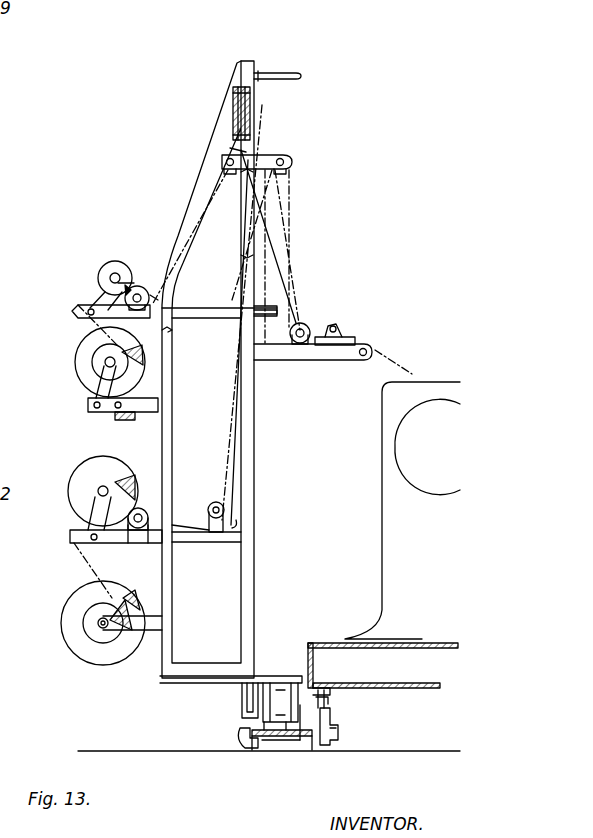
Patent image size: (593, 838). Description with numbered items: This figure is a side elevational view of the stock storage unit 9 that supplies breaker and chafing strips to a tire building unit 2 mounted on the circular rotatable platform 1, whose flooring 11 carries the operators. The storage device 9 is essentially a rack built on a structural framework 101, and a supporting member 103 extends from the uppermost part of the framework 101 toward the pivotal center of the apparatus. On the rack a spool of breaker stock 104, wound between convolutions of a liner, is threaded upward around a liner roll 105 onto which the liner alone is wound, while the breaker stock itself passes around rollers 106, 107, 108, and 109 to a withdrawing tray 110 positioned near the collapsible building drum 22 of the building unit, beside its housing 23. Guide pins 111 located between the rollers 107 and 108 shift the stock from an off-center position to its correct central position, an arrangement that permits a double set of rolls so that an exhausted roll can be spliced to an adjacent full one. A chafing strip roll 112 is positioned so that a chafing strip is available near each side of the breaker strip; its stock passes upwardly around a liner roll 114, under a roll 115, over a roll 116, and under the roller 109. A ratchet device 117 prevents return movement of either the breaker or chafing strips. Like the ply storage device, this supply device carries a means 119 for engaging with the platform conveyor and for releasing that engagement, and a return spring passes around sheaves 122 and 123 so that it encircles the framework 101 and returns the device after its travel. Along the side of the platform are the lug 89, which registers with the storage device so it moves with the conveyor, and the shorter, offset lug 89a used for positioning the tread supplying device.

The circular rotatable platform 1 is at (302, 628).
The tire building unit 2 is at (366, 440).
The stock storage unit for breaker and chafing strips 9 is at (162, 193).
The flooring 11 is at (323, 645).
The collapsible building drum 22 is at (433, 406).
The housing 23 is at (387, 528).
The lug 89 is at (327, 690).
The lug for positioning the tread supplying device 89a is at (330, 704).
The structural framework 101 is at (254, 486).
The supporting member 103 is at (283, 74).
The spool of fabric or breaker stock 104 is at (63, 623).
The liner roll 105 is at (71, 491).
The roller 106 is at (137, 530).
The roller 107 is at (215, 503).
The roller 108 is at (280, 155).
The roller 109 is at (304, 322).
The withdrawing tray 110 is at (318, 354).
The guide pins 111 is at (263, 310).
The chafing strip roll 112 is at (74, 362).
The liner roll 114 is at (113, 264).
The roll 115 is at (137, 284).
The roll 116 is at (230, 150).
The ratchet device 117 is at (349, 314).
The means for engaging with the platform conveyor 119 is at (357, 720).
The sheave 122 is at (250, 697).
The sheave 123 is at (250, 100).